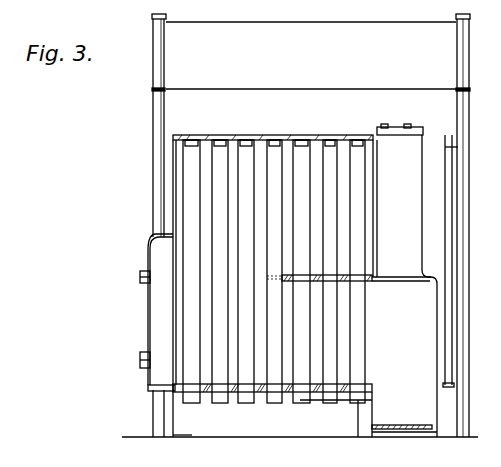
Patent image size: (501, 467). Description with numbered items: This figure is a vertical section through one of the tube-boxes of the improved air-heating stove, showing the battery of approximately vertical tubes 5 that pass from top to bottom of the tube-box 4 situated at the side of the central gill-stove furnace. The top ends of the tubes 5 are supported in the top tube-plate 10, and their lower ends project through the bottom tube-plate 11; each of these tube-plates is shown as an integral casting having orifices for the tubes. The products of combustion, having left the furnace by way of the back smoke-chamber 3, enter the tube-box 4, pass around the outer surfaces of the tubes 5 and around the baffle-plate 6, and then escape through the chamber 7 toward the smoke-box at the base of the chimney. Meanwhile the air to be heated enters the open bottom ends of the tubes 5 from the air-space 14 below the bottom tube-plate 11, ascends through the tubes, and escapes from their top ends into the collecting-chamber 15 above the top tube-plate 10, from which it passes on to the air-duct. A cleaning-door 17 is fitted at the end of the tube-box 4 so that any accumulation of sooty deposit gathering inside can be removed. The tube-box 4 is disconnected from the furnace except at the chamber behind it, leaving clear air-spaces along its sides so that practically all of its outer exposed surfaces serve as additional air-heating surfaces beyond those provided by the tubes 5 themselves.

The back smoke-chamber 3 is at (404, 280).
The tube-box 4 is at (233, 377).
The tubes 5 is at (383, 337).
The baffle-plate 6 is at (317, 281).
The chamber 7 is at (398, 348).
The top tube-plate 10 is at (287, 135).
The bottom tube-plate 11 is at (288, 397).
The air-space 14 is at (346, 416).
The collecting-chamber 15 is at (311, 225).
The cleaning-door 17 is at (150, 327).